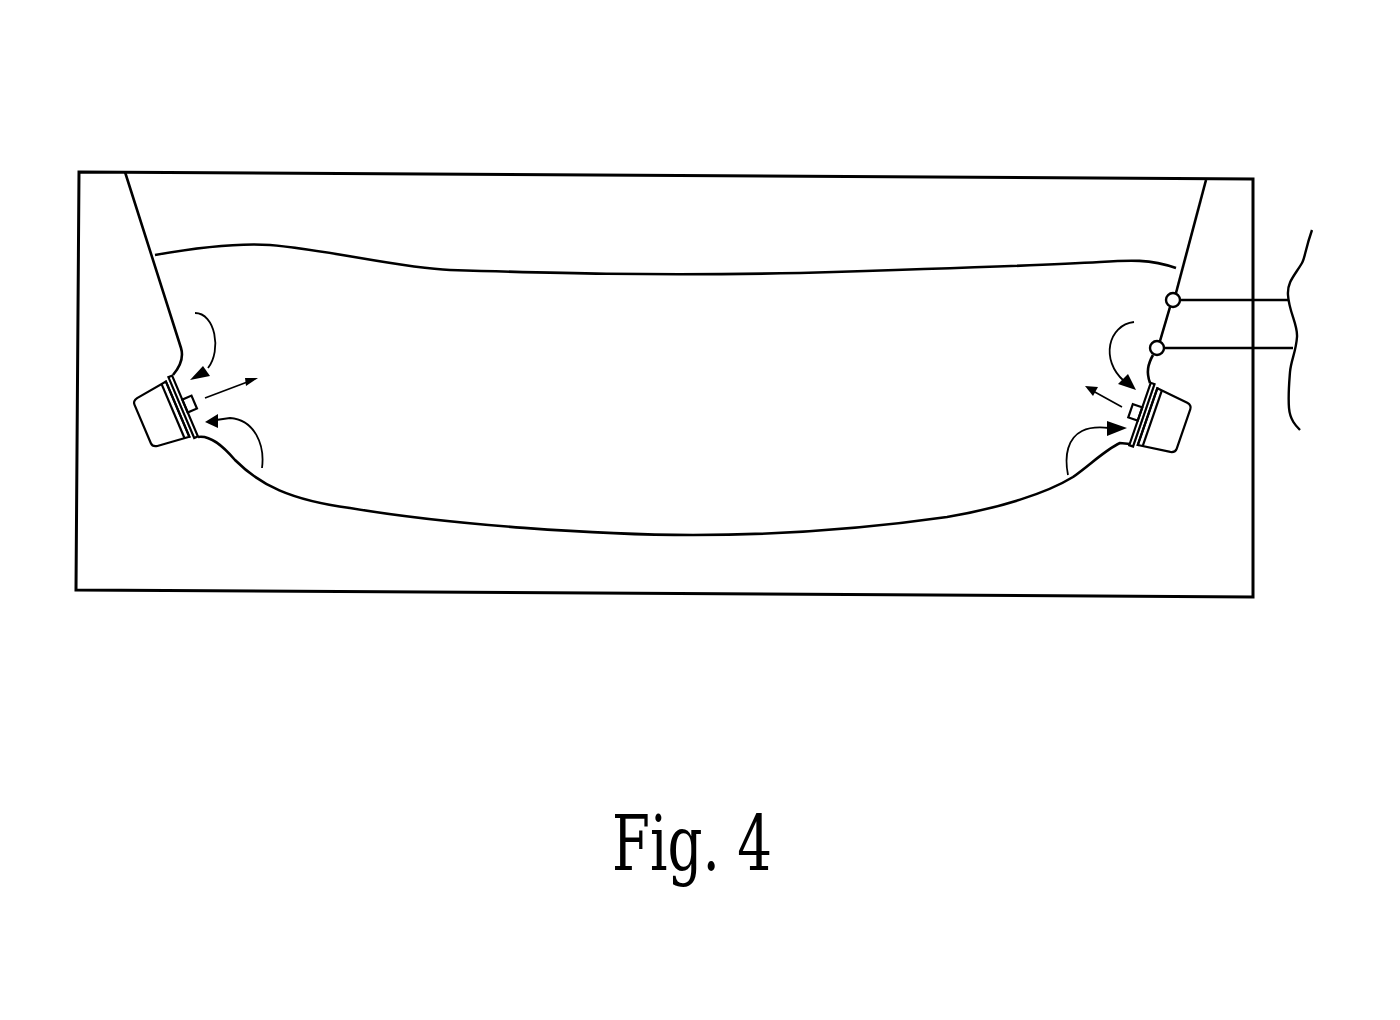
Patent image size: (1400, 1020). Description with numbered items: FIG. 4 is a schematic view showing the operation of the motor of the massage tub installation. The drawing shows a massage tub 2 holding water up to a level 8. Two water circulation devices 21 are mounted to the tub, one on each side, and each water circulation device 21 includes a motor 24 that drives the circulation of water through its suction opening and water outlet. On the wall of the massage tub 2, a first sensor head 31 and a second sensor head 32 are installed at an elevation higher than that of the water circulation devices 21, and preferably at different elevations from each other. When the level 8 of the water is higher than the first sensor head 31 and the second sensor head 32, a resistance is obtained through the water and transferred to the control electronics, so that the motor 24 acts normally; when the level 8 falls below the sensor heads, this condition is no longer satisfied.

The massage tub 2 is at (108, 190).
The level 8 is at (683, 268).
The water circulation device 21 is at (147, 485).
The motor 24 is at (172, 443).
The first sensor head 31 is at (1185, 293).
The second sensor head 32 is at (1159, 356).